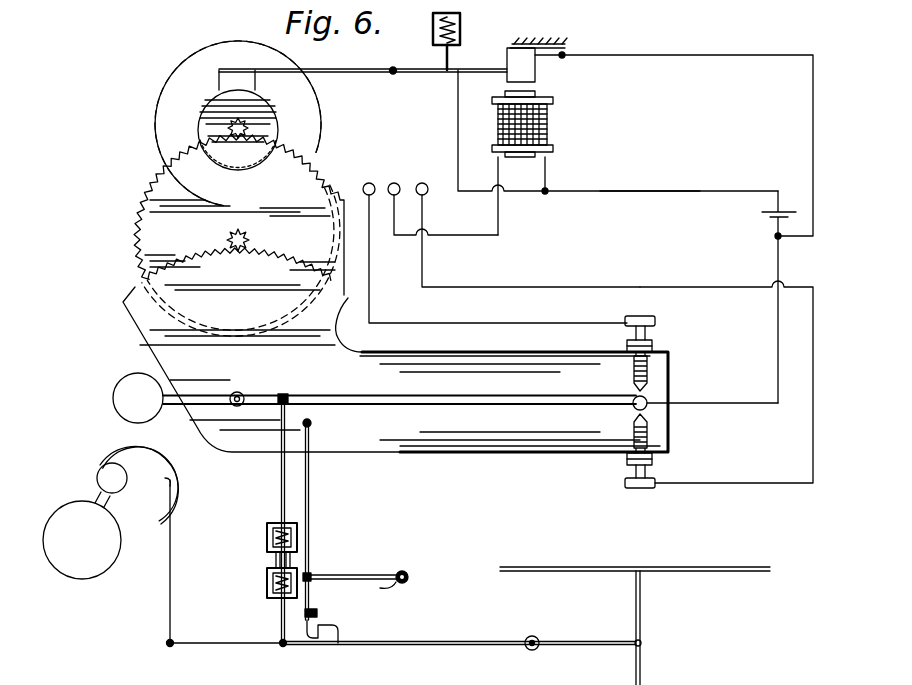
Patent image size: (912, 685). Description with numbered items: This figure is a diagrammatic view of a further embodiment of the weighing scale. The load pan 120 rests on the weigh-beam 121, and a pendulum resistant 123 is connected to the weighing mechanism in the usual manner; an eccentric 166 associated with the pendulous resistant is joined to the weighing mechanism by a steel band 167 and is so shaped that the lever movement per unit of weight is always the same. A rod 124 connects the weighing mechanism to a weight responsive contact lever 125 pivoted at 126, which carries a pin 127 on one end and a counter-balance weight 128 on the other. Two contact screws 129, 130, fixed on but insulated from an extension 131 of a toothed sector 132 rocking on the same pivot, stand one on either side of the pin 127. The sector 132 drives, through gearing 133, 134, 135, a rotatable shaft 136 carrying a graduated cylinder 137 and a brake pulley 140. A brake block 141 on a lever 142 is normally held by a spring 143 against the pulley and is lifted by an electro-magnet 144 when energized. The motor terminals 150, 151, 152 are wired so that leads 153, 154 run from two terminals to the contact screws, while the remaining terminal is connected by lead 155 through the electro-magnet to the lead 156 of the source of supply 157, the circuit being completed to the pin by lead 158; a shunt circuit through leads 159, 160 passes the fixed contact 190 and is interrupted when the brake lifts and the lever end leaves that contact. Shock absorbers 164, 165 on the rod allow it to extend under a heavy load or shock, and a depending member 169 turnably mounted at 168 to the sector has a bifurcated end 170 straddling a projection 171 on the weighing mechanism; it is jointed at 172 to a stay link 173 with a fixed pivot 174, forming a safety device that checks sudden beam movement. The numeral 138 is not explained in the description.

The load pan 120 is at (618, 568).
The weigh-beam 121 is at (450, 648).
The pendulum resistant 123 is at (82, 567).
The rod 124 is at (280, 480).
The weight responsive contact lever 125 is at (430, 398).
The pivot 126 is at (240, 390).
The pin 127 is at (633, 400).
The counter-balance weight 128 is at (120, 385).
The contact screw 129 is at (630, 374).
The contact screw 130 is at (633, 430).
The extension 131 is at (487, 430).
The toothed sector 132 is at (140, 323).
The gearing 133 is at (228, 240).
The gearing 134 is at (318, 187).
The gearing 135 is at (200, 130).
The rotatable shaft 136 is at (250, 130).
The cylinder 137 is at (200, 58).
The base 138 is at (113, 675).
The brake pulley 140 is at (258, 110).
The brake block 141 is at (219, 77).
The lever 142 is at (425, 68).
The spring 143 is at (462, 32).
The electro-magnet 144 is at (553, 115).
The motor terminal 150 is at (370, 183).
The motor terminal 151 is at (394, 183).
The motor terminal 152 is at (422, 183).
The lead 153 is at (548, 325).
The lead 154 is at (640, 287).
The lead 155 is at (422, 258).
The lead 156 is at (616, 196).
The source of supply 157 is at (770, 220).
The lead 158 is at (778, 322).
The shunt circuit lead 159 is at (690, 58).
The shunt circuit lead 160 is at (458, 102).
The shock absorber 164 is at (267, 590).
The shock absorber 165 is at (267, 533).
The eccentric 166 is at (160, 505).
The steel band 167 is at (170, 572).
The turnable mounting 168 is at (312, 423).
The depending member 169 is at (310, 488).
The bifurcated end 170 is at (315, 612).
The projection 171 is at (335, 620).
The turnable joint 172 is at (316, 575).
The stay link 173 is at (385, 588).
The fixed pivot 174 is at (406, 573).
The fixed contact 190 is at (520, 62).